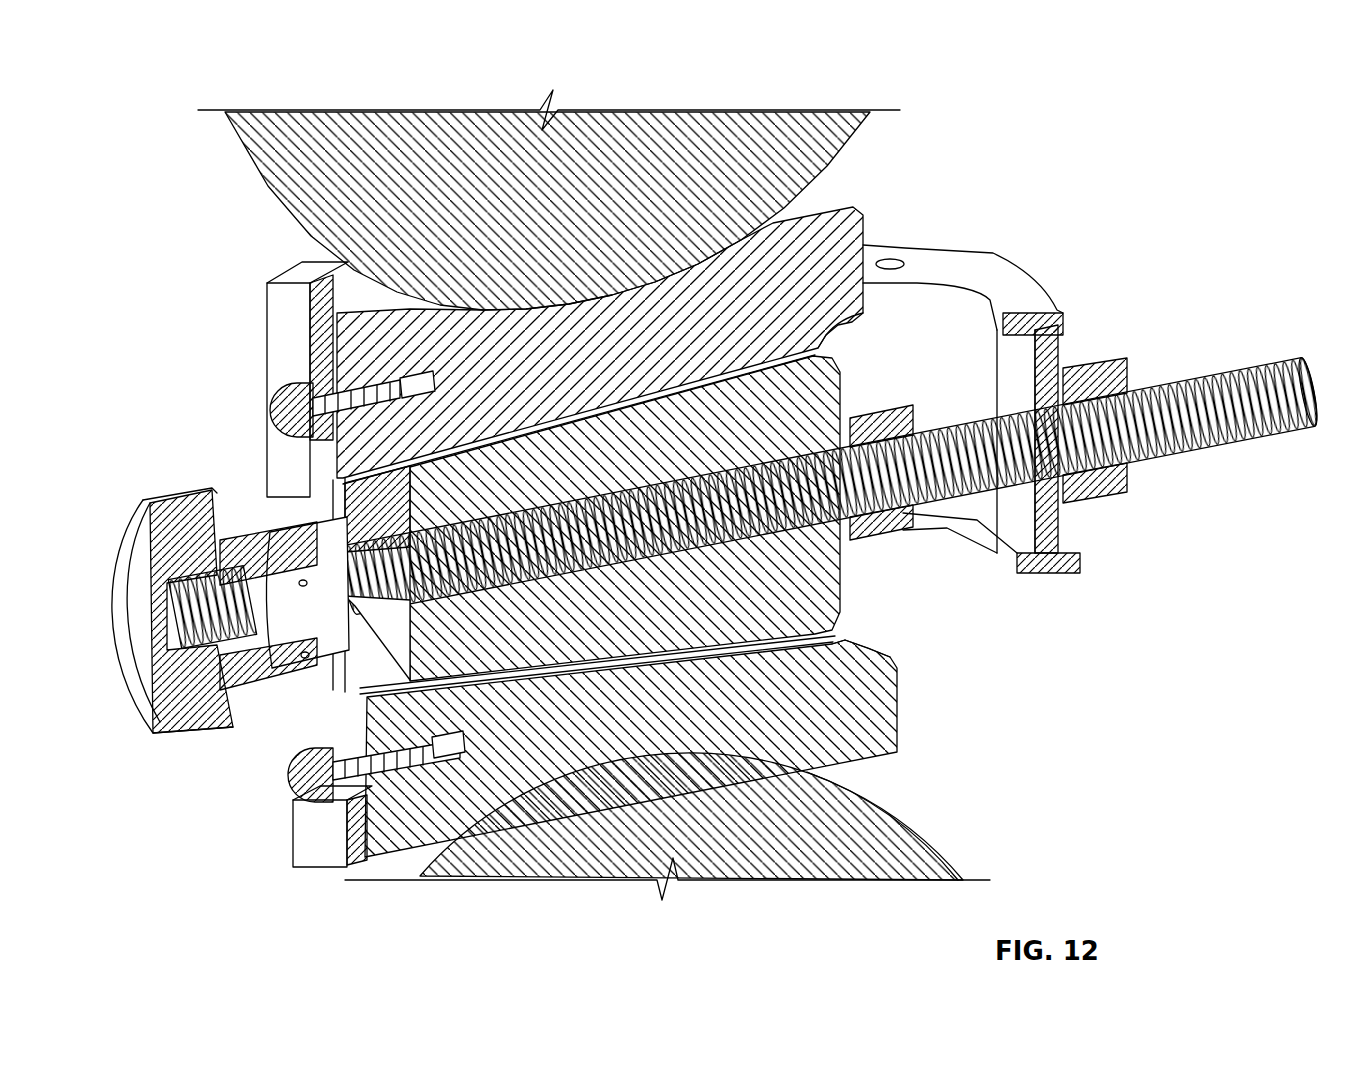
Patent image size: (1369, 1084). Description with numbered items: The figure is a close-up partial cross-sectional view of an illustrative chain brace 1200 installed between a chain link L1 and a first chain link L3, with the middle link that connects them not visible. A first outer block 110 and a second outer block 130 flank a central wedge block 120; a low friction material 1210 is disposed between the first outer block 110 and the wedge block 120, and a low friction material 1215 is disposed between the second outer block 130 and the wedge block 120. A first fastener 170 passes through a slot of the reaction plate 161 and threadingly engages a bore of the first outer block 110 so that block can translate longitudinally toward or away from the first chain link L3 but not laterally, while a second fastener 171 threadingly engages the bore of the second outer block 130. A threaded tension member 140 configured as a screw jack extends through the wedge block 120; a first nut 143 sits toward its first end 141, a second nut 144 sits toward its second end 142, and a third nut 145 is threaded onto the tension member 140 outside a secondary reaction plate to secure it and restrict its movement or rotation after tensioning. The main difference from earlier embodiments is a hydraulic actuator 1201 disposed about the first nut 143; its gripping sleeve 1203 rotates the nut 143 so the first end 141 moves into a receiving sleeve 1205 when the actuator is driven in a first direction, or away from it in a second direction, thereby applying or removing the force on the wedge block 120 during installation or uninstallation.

The chain brace 1200 is at (165, 72).
The first chain link L3 is at (285, 130).
The first outer block 110 is at (866, 178).
The low friction material 1210 is at (824, 342).
The wedge block 120 is at (868, 588).
The second outer block 130 is at (918, 716).
The low friction material 1215 is at (860, 660).
The chain link L1 is at (918, 846).
The reaction plate 161 is at (290, 333).
The first fastener 170 is at (287, 396).
The second fastener 171 is at (292, 800).
The tension member 140 is at (1200, 448).
The second end 142 is at (1312, 374).
The first nut 143 is at (233, 715).
The gripping sleeve 1203 is at (287, 700).
The hydraulic actuator 1201 is at (155, 468).
The receiving sleeve 1205 is at (167, 660).
The first end 141 is at (193, 720).
The second nut 144 is at (905, 525).
The third nut 145 is at (1100, 496).